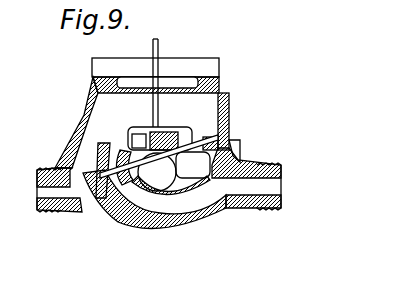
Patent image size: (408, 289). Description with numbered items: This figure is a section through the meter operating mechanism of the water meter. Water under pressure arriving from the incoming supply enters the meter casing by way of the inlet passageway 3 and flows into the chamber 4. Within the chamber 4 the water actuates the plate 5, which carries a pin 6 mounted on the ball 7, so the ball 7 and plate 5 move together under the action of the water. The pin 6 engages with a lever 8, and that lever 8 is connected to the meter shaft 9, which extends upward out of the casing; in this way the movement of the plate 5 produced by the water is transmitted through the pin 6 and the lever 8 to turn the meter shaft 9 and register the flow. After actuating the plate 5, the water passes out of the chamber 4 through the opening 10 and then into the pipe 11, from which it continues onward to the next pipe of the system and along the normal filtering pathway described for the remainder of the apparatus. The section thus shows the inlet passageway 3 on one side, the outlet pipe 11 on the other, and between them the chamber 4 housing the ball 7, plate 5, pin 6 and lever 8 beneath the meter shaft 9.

The inlet passageway 3 is at (257, 187).
The chamber 4 is at (236, 151).
The plate 5 is at (210, 145).
The pin 6 is at (193, 94).
The ball 7 is at (163, 188).
The lever 8 is at (173, 133).
The meter shaft 9 is at (158, 78).
The opening 10 is at (117, 182).
The pipe 11 is at (53, 185).